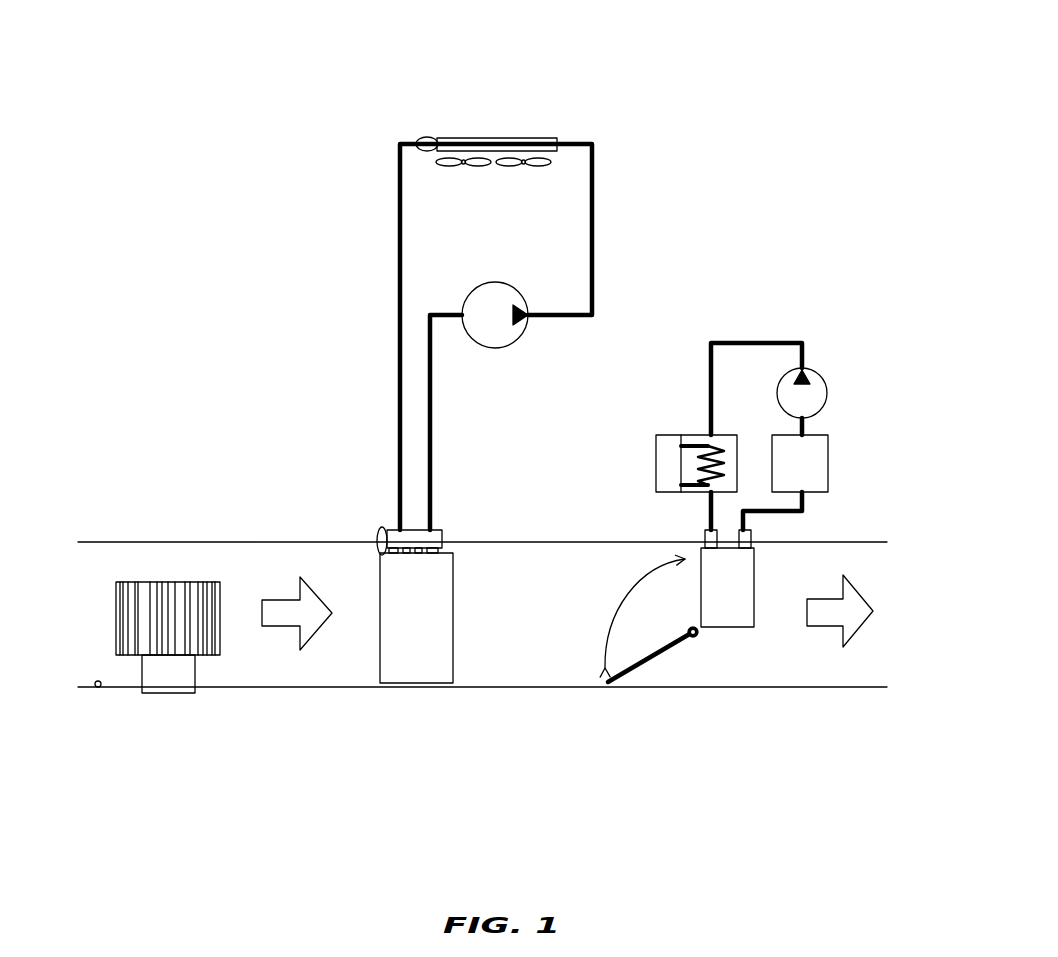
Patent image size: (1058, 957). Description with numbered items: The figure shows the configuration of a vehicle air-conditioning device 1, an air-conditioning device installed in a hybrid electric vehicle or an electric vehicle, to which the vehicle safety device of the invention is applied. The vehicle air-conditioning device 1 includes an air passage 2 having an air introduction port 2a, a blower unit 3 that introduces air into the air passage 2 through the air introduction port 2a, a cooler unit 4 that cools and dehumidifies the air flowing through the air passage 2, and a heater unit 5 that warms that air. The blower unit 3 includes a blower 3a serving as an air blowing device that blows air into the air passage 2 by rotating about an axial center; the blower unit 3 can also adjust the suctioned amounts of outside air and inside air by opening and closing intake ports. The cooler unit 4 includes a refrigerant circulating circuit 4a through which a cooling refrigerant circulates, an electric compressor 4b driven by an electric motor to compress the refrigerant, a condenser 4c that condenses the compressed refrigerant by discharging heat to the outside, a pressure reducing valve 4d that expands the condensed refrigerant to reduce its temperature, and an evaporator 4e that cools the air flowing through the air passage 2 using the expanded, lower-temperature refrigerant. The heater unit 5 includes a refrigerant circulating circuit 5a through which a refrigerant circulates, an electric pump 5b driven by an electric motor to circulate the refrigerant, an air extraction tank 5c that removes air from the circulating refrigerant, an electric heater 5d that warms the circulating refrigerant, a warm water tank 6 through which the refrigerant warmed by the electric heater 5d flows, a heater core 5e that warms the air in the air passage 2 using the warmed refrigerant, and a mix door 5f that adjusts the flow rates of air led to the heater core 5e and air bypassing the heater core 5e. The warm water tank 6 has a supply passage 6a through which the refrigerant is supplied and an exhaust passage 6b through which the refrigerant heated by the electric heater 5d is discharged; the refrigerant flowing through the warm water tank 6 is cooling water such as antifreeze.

The vehicle air-conditioning device 1 is at (811, 80).
The air passage 2 is at (289, 690).
The air introduction port 2a is at (97, 688).
The blower unit 3 is at (208, 527).
The blower 3a is at (158, 690).
The cooler unit 4 is at (602, 122).
The refrigerant circulating circuit 4a is at (593, 228).
The electric compressor 4b is at (494, 348).
The condenser 4c is at (491, 138).
The pressure reducing valve 4d is at (398, 530).
The evaporator 4e is at (417, 660).
The heater unit 5 is at (806, 315).
The refrigerant circulating circuit 5a is at (758, 342).
The electric pump 5b is at (830, 393).
The air extraction tank 5c is at (830, 463).
The electric heater 5d is at (700, 447).
The heater core 5e is at (723, 620).
The mix door 5f is at (640, 668).
The warm water tank 6 is at (681, 462).
The supply passage 6a is at (713, 434).
The exhaust passage 6b is at (706, 498).